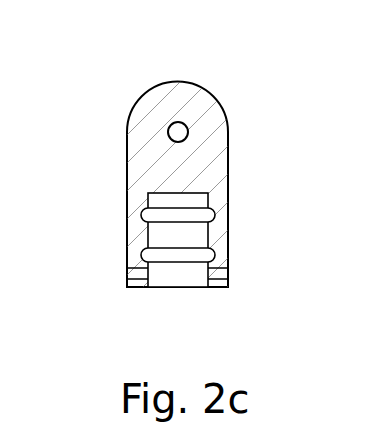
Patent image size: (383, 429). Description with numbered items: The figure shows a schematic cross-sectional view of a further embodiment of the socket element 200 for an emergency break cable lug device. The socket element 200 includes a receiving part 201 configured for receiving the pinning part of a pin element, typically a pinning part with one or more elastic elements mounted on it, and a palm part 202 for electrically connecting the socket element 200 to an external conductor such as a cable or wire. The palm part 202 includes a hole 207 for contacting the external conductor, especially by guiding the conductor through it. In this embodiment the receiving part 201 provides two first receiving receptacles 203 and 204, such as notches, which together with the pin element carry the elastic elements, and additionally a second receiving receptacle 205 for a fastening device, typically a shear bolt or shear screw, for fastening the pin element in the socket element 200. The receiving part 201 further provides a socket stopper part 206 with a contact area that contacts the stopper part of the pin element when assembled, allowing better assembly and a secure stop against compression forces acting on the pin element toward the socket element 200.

The socket element 200 is at (191, 214).
The receiving part 201 is at (193, 277).
The palm part 202 is at (237, 143).
The first receiving receptacle 203 is at (210, 255).
The first receiving receptacle 204 is at (210, 215).
The second receiving receptacle 205 is at (127, 275).
The socket stopper part 206 is at (217, 288).
The hole 207 is at (178, 132).